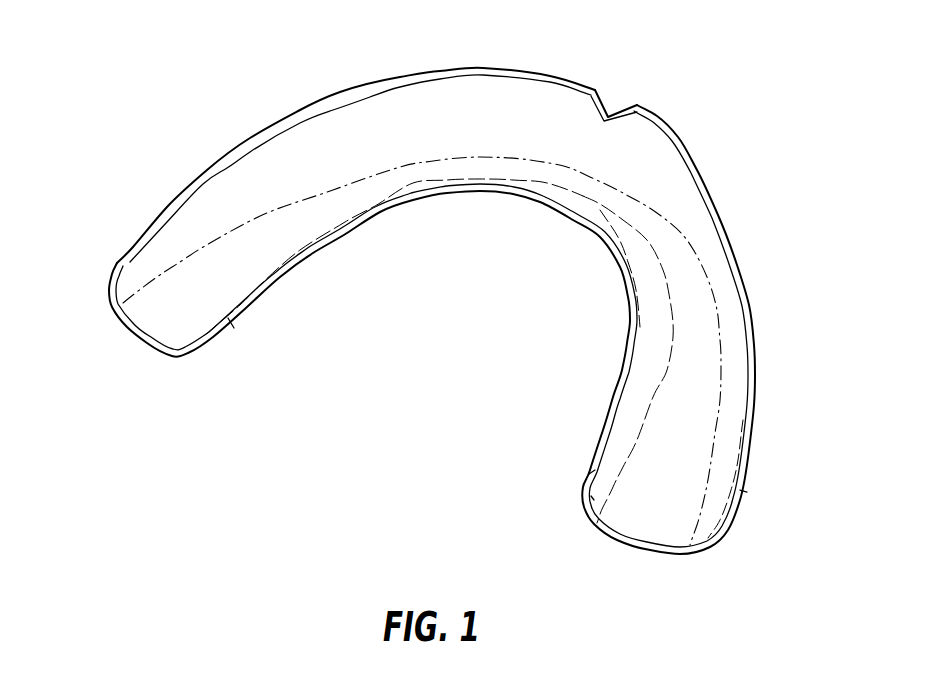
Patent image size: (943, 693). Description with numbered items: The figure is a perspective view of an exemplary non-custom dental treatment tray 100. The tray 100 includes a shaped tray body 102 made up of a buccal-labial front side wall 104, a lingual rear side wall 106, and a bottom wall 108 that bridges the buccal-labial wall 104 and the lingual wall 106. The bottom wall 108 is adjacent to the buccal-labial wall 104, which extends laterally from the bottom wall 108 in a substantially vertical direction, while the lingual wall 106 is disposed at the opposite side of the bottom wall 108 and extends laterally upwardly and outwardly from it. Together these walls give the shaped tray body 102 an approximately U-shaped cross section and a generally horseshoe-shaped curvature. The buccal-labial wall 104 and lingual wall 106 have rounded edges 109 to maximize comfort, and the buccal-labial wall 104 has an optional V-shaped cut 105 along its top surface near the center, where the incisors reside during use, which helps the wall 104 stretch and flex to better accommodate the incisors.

The dental treatment tray 100 is at (121, 151).
The shaped tray body 102 is at (512, 134).
The buccal-labial front side wall 104 is at (677, 193).
The V-shaped cut 105 is at (620, 100).
The lingual rear side wall 106 is at (630, 247).
The bottom wall 108 is at (690, 367).
The rounded edges 109 is at (603, 432).